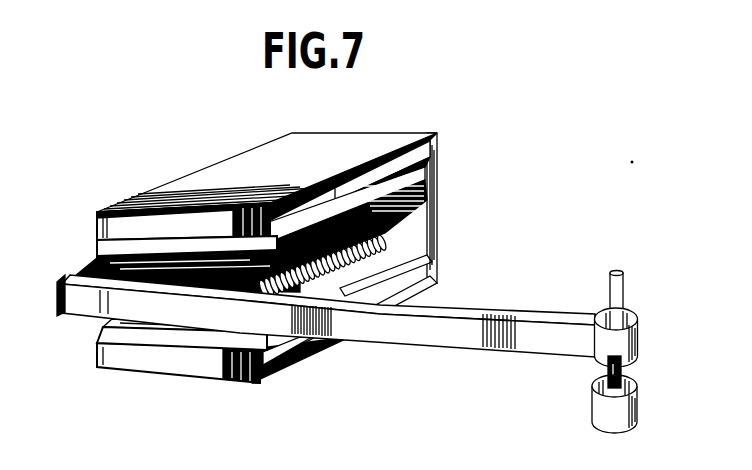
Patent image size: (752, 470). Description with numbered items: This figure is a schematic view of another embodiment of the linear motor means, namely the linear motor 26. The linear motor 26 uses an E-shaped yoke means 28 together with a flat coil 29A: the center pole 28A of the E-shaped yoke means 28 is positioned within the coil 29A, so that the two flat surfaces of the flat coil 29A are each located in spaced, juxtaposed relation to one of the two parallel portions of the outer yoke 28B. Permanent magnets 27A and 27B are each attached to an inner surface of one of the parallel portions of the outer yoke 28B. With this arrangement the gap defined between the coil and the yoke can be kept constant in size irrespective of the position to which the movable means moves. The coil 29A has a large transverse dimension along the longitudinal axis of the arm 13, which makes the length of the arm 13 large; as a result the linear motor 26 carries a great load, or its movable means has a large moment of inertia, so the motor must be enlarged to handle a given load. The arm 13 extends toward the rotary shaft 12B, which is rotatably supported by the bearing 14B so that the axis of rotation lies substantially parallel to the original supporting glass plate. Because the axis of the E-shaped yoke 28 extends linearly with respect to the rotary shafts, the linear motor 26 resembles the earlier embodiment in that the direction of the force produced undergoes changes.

The linear motor 26 is at (353, 128).
The E-shaped yoke means 28 is at (437, 166).
The center pole 28A is at (405, 222).
The outer yoke 28B is at (172, 192).
The permanent magnet 27A is at (103, 247).
The permanent magnet 27B is at (223, 346).
The flat coil 29A is at (395, 248).
The arm 13 is at (425, 338).
The rotary shaft 12B is at (620, 377).
The bearing 14B is at (603, 415).